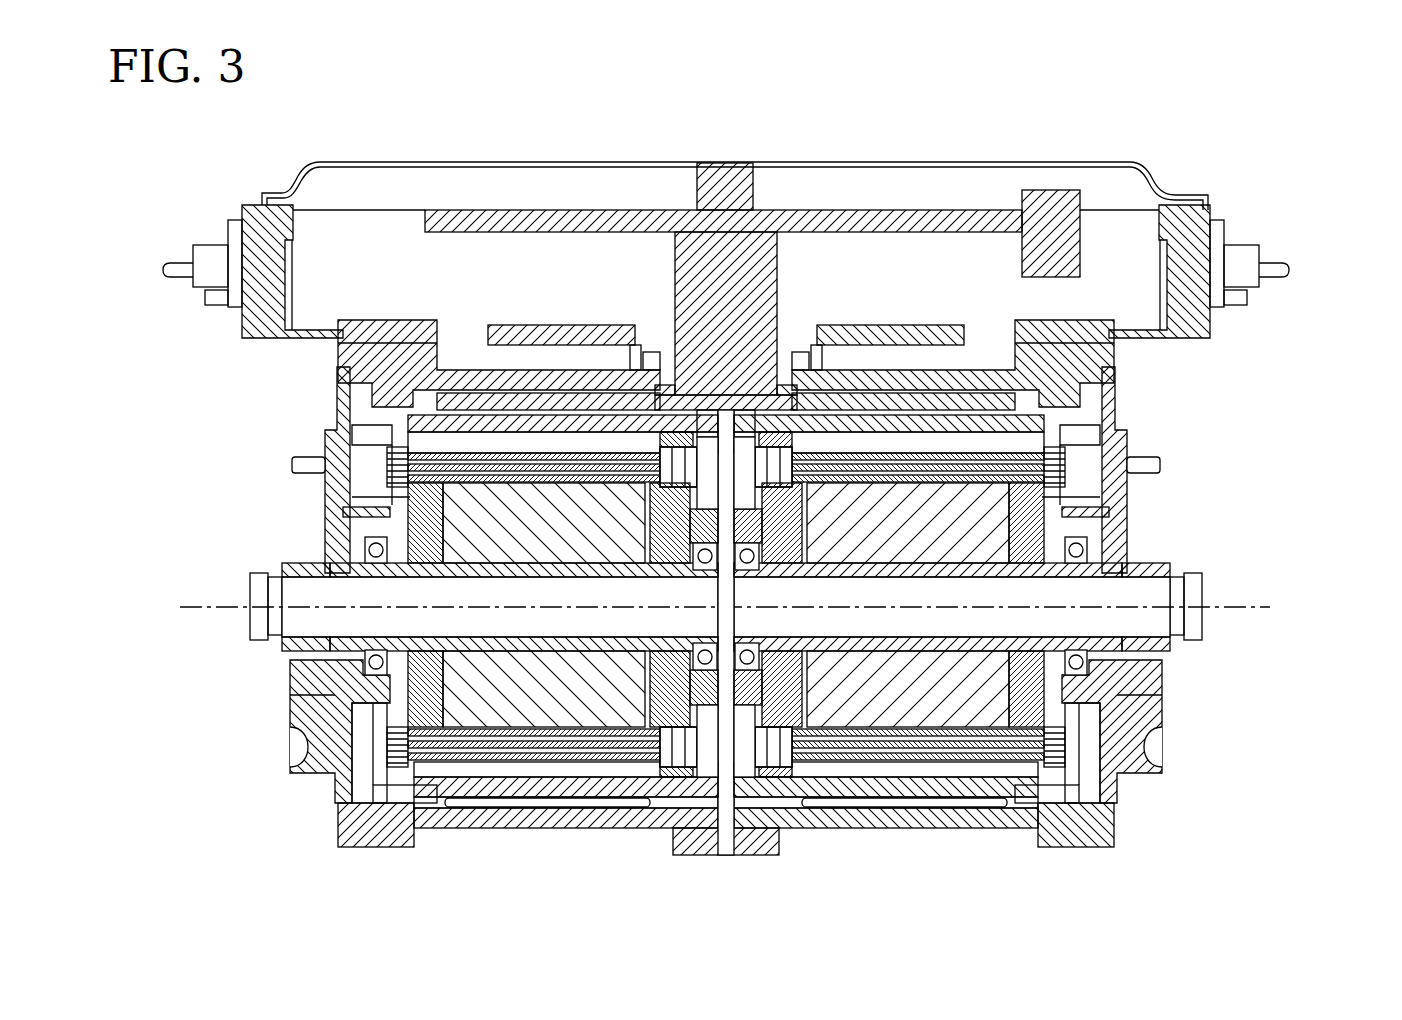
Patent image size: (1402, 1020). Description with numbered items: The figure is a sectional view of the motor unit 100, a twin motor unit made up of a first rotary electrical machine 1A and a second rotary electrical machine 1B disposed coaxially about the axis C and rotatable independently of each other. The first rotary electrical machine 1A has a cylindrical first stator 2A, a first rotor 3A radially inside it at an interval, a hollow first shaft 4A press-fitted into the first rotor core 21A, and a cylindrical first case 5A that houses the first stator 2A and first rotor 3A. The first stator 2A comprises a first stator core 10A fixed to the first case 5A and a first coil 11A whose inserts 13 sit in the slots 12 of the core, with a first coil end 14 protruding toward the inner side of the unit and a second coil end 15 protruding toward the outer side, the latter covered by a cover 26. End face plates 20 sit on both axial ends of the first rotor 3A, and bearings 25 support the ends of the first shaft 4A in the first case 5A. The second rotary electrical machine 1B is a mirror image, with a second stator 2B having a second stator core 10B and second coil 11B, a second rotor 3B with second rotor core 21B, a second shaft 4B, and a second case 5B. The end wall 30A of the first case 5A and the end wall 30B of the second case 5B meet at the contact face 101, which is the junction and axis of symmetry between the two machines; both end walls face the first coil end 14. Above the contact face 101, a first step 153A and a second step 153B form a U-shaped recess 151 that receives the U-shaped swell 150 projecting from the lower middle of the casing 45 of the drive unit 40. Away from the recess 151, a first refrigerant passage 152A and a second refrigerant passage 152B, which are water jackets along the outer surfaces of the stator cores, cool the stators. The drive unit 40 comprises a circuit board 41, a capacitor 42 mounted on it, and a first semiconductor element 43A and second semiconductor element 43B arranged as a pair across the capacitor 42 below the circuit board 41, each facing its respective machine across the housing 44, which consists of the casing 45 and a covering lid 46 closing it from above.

The motor unit 100 is at (1284, 84).
The drive unit 40 is at (763, 245).
The circuit board 41 is at (830, 220).
The capacitor 42 is at (765, 262).
The first semiconductor element 43A is at (556, 326).
The second semiconductor element 43B is at (890, 334).
The housing 44 is at (812, 235).
The casing 45 is at (1197, 232).
The covering lid 46 is at (1145, 178).
The swell 150 is at (663, 410).
The recess 151 is at (716, 400).
The first refrigerant passage 152A is at (535, 405).
The second refrigerant passage 152B is at (975, 398).
The first step 153A is at (700, 417).
The second step 153B is at (782, 405).
The contact face 101 is at (735, 465).
The first rotary electrical machine 1A is at (318, 444).
The second rotary electrical machine 1B is at (1134, 444).
The end wall 30A is at (720, 490).
The end wall 30B is at (735, 455).
The first shaft 4A is at (262, 574).
The second shaft 4B is at (1188, 574).
The axis C is at (208, 607).
The bearings 25 is at (363, 672).
The cover 26 is at (325, 743).
The end face plates 20 is at (438, 707).
The second coil end 15 is at (421, 757).
The first case 5A is at (440, 830).
The second case 5B is at (788, 830).
The first stator 2A is at (472, 798).
The second stator 2B is at (862, 797).
The first coil 11A is at (511, 780).
The second coil 11B is at (910, 780).
The inserts 13 is at (545, 760).
The first stator core 10A is at (565, 785).
The second stator core 10B is at (975, 787).
The slots 12 is at (593, 755).
The first rotor core 21A is at (524, 721).
The second rotor core 21B is at (928, 721).
The first rotor 3A is at (615, 697).
The second rotor 3B is at (982, 700).
The first coil end 14 is at (707, 705).